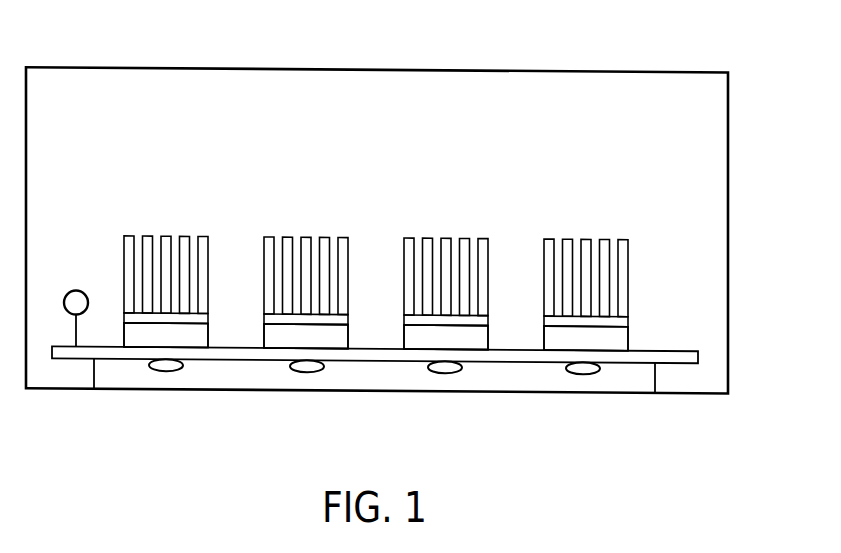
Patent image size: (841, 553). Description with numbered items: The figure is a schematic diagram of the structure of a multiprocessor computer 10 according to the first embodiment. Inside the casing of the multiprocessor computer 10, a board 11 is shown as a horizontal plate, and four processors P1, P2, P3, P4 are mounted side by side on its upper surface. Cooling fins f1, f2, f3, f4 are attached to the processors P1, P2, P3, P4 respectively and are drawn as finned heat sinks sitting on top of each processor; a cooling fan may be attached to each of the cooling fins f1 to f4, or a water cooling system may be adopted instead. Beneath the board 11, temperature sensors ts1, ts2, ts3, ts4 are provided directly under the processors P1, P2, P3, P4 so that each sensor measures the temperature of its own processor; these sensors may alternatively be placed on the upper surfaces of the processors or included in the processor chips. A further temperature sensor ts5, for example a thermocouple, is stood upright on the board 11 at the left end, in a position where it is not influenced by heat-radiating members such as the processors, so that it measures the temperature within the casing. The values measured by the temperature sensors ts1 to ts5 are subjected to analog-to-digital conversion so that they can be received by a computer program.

The multiprocessor computer 10 is at (696, 67).
The board 11 is at (674, 346).
The cooling fin f1 is at (186, 235).
The processor P1 is at (195, 337).
The cooling fin f2 is at (326, 235).
The processor P2 is at (338, 337).
The cooling fin f3 is at (467, 235).
The processor P3 is at (479, 337).
The cooling fin f4 is at (606, 235).
The processor P4 is at (618, 337).
The temperature sensor ts1 is at (166, 371).
The temperature sensor ts2 is at (307, 371).
The temperature sensor ts3 is at (445, 371).
The temperature sensor ts4 is at (583, 371).
The temperature sensor ts5 is at (76, 290).